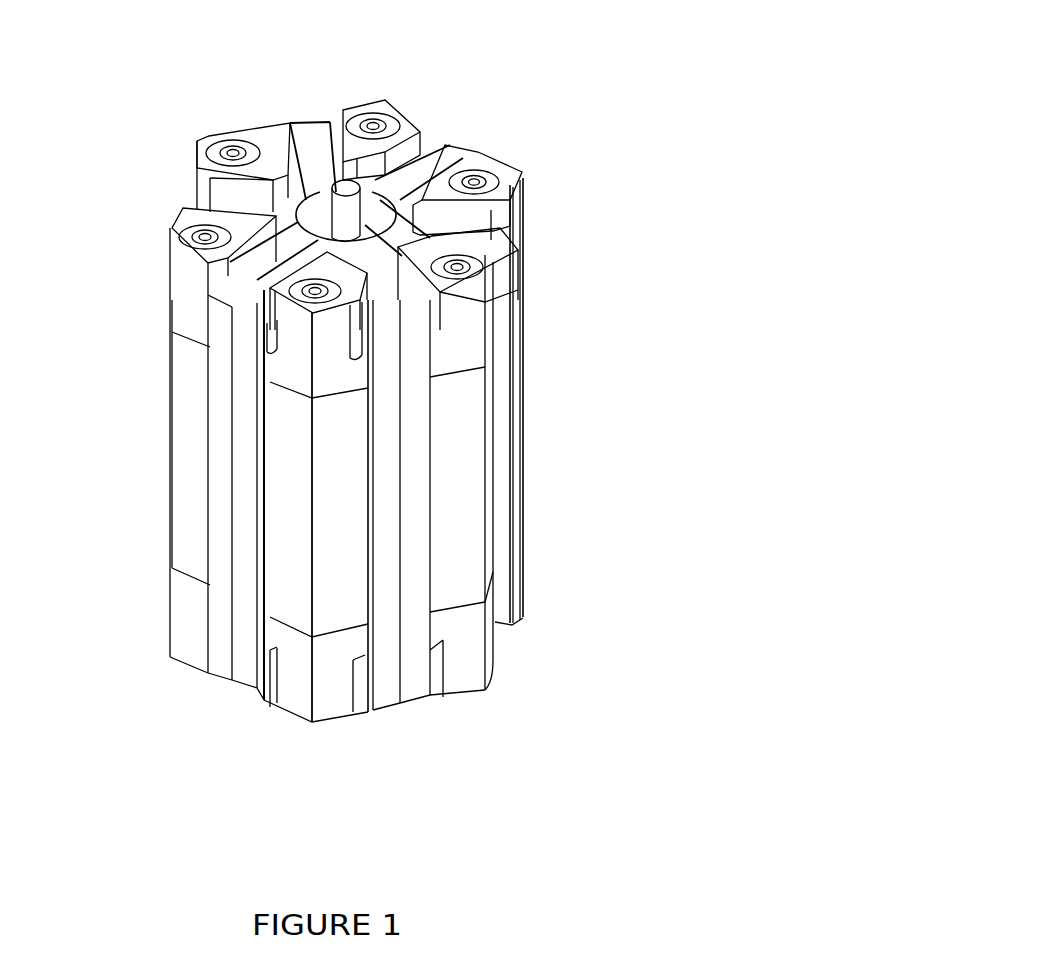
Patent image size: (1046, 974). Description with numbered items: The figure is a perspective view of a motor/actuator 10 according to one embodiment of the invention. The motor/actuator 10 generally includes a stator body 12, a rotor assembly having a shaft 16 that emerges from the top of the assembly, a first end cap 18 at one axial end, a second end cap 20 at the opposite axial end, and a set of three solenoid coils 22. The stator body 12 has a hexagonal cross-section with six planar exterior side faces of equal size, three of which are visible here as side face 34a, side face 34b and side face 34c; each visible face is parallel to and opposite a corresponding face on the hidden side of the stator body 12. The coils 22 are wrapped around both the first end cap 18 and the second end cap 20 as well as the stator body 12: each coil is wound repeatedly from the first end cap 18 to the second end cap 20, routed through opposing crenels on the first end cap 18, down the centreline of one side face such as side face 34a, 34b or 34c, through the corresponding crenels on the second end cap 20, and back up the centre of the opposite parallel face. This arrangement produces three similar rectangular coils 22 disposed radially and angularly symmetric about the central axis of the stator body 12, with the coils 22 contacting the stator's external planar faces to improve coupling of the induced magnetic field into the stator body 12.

The motor/actuator 10 is at (751, 124).
The stator body 12 is at (169, 465).
The shaft 16 is at (305, 140).
The first end cap 18 is at (169, 275).
The second end cap 20 is at (171, 603).
The solenoid coils 22 is at (210, 408).
The side face 34a is at (188, 530).
The side face 34b is at (288, 578).
The side face 34c is at (485, 522).